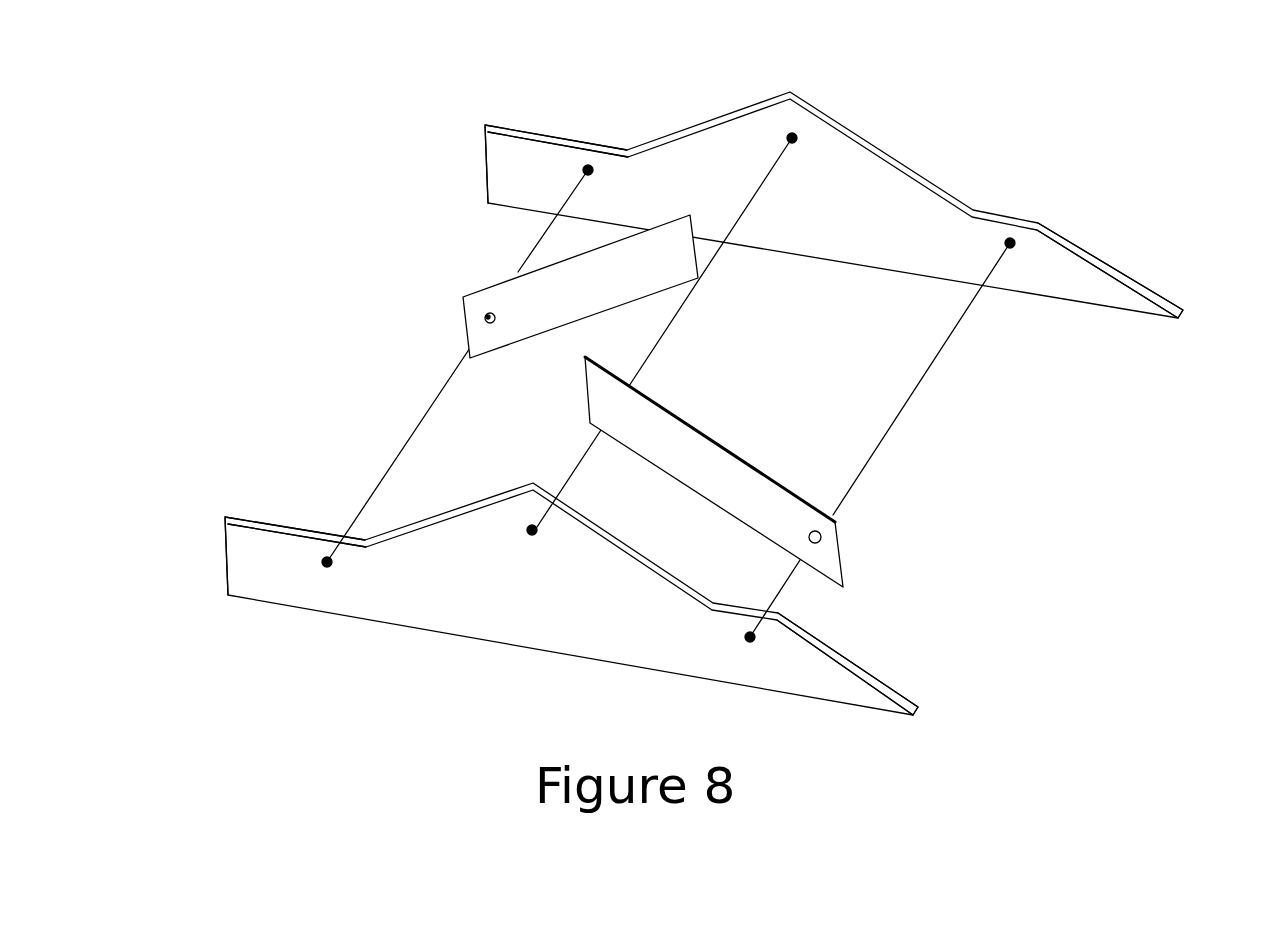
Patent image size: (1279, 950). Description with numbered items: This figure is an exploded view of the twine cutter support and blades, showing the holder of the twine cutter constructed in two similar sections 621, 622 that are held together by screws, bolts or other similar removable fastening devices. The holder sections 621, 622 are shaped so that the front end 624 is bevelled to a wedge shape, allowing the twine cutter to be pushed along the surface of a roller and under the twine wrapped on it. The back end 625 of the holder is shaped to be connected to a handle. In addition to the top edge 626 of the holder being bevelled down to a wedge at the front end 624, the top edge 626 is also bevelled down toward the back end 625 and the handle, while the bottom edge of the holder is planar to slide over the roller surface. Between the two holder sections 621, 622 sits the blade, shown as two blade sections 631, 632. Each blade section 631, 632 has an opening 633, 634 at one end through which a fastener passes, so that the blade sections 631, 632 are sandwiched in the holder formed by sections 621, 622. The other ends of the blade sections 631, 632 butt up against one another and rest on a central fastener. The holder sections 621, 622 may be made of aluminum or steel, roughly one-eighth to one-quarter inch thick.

The holder section 621 is at (633, 615).
The holder section 622 is at (920, 203).
The front end 624 is at (1085, 282).
The back end 625 is at (503, 167).
The top edge 626 is at (800, 120).
The blade section 631 is at (603, 268).
The blade section 632 is at (773, 502).
The opening 633 is at (485, 318).
The opening 634 is at (821, 538).